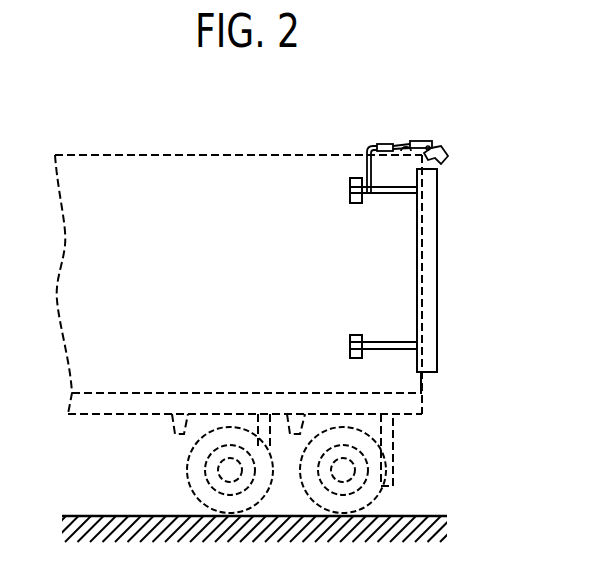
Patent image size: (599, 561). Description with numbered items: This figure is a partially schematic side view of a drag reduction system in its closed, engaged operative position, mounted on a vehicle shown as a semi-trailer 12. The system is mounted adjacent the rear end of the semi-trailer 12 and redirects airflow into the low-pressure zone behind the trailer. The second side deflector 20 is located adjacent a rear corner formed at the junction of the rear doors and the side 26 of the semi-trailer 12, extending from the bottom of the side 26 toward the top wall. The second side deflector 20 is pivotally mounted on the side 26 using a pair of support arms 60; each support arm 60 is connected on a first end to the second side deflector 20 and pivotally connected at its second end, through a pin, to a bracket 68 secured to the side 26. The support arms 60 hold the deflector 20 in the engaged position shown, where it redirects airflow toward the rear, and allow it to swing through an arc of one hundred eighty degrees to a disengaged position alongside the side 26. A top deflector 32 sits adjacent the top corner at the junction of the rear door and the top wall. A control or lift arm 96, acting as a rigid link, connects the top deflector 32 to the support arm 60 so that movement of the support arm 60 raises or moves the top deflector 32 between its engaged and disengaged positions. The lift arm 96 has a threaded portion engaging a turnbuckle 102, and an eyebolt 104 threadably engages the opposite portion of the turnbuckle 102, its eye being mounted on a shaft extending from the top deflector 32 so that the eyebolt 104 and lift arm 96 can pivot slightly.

The semi-trailer 12 is at (176, 187).
The side 26 is at (243, 203).
The second side deflector 20 is at (428, 322).
The support arm 60 is at (392, 194).
The bracket 68 is at (350, 181).
The control or lift arm 96 is at (368, 150).
The turnbuckle 102 is at (383, 143).
The eyebolt 104 is at (430, 145).
The top deflector 32 is at (442, 148).